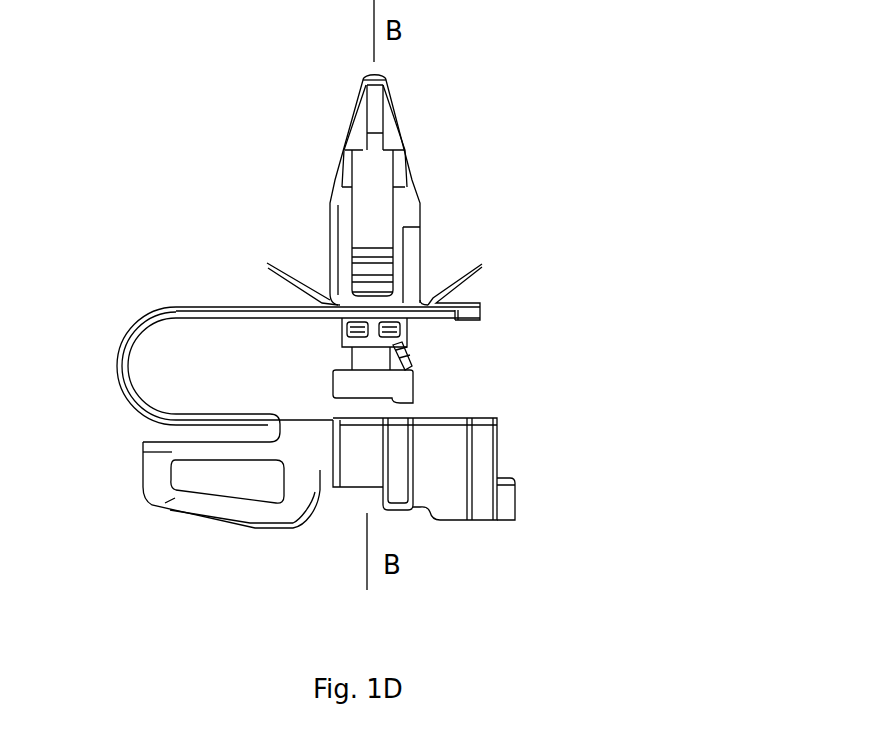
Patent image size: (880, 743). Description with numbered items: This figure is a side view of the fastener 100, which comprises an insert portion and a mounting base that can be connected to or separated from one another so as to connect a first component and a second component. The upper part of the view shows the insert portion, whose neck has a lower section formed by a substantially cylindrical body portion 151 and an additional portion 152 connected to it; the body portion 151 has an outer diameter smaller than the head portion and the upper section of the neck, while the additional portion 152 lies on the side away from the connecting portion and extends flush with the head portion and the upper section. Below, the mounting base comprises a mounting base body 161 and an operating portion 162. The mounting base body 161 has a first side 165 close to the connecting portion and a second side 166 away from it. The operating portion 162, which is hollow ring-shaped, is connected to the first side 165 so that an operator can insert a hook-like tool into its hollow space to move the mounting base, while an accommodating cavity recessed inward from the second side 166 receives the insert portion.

The fastener 100 is at (641, 163).
The body portion 151 is at (367, 360).
The additional portion 152 is at (406, 345).
The mounting base body 161 is at (472, 495).
The operating portion 162 is at (153, 497).
The first side 165 is at (299, 484).
The second side 166 is at (490, 452).